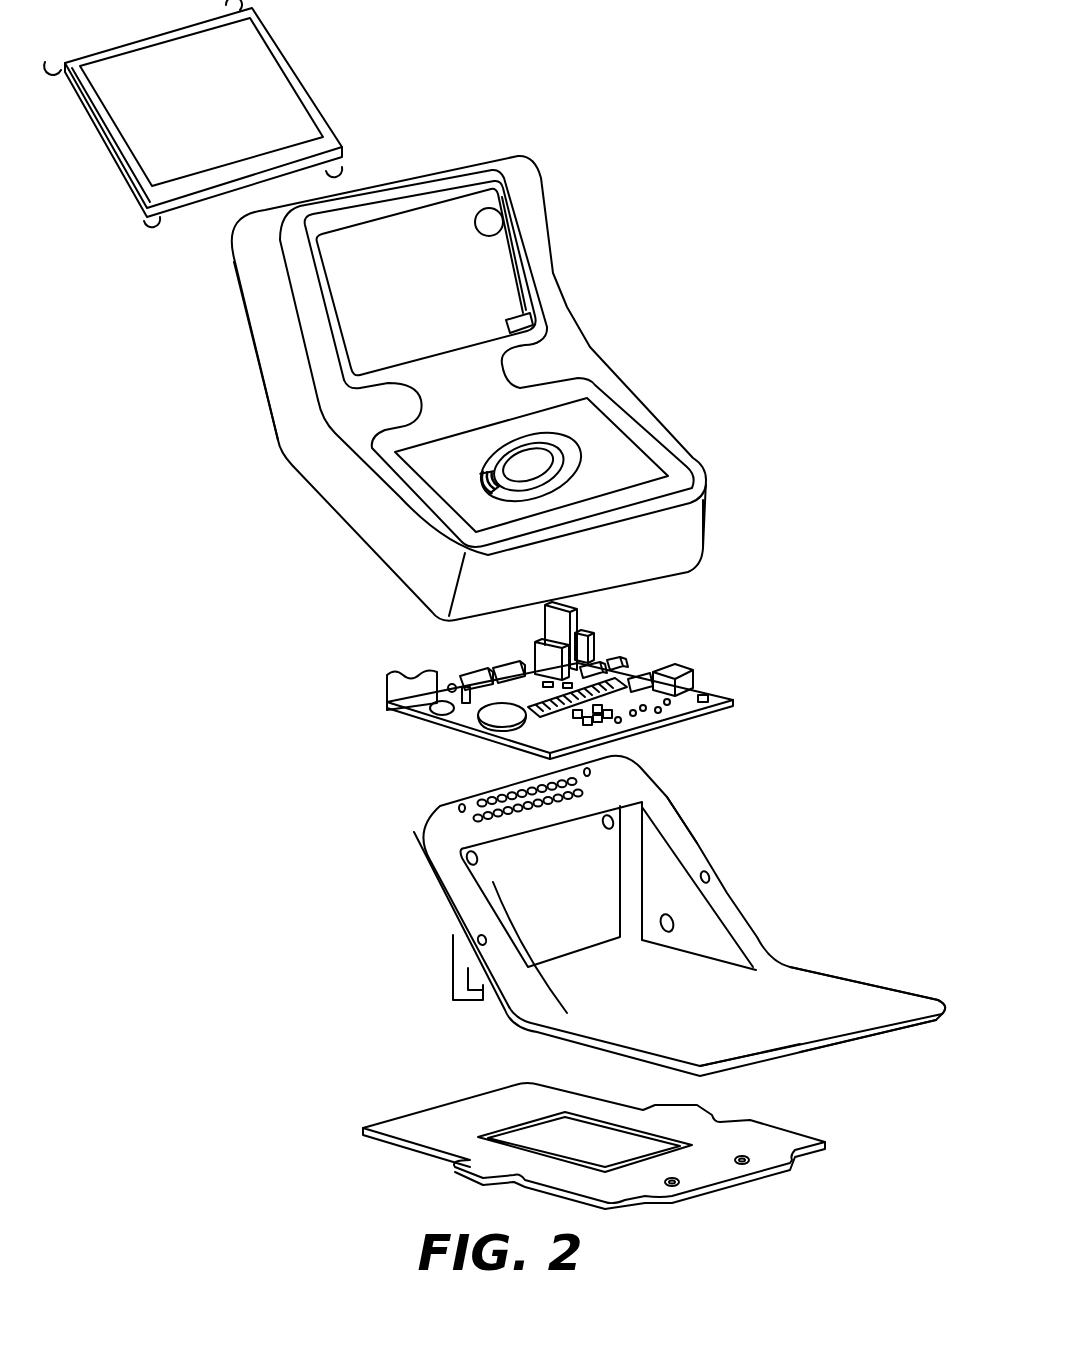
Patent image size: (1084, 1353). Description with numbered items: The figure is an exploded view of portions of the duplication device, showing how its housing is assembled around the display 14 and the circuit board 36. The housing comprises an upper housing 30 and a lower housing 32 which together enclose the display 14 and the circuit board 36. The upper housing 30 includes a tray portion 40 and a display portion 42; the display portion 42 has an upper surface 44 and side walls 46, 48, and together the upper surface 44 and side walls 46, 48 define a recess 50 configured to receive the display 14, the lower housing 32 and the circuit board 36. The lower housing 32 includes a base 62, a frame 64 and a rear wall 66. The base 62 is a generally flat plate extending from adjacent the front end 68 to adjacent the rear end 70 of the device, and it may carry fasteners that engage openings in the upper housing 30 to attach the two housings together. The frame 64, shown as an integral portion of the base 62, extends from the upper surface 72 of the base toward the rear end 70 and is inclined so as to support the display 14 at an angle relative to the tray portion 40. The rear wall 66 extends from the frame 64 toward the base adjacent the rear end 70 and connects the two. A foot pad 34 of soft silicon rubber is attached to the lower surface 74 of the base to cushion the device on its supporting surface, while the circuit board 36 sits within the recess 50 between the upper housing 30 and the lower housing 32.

The display 14 is at (303, 73).
The upper housing 30 is at (603, 346).
The lower housing 32 is at (896, 1004).
The foot pad 34 is at (825, 1142).
The circuit board 36 is at (735, 680).
The tray portion 40 is at (665, 425).
The display portion 42 is at (547, 258).
The upper surface 44 is at (495, 160).
The side wall 46 is at (270, 424).
The side wall 48 is at (688, 528).
The recess 50 is at (500, 208).
The base 62 is at (783, 957).
The frame 64 is at (683, 836).
The rear wall 66 is at (493, 882).
The front end 68 is at (876, 1053).
The rear end 70 is at (619, 944).
The upper surface 72 is at (842, 1002).
The lower surface 74 is at (803, 1058).